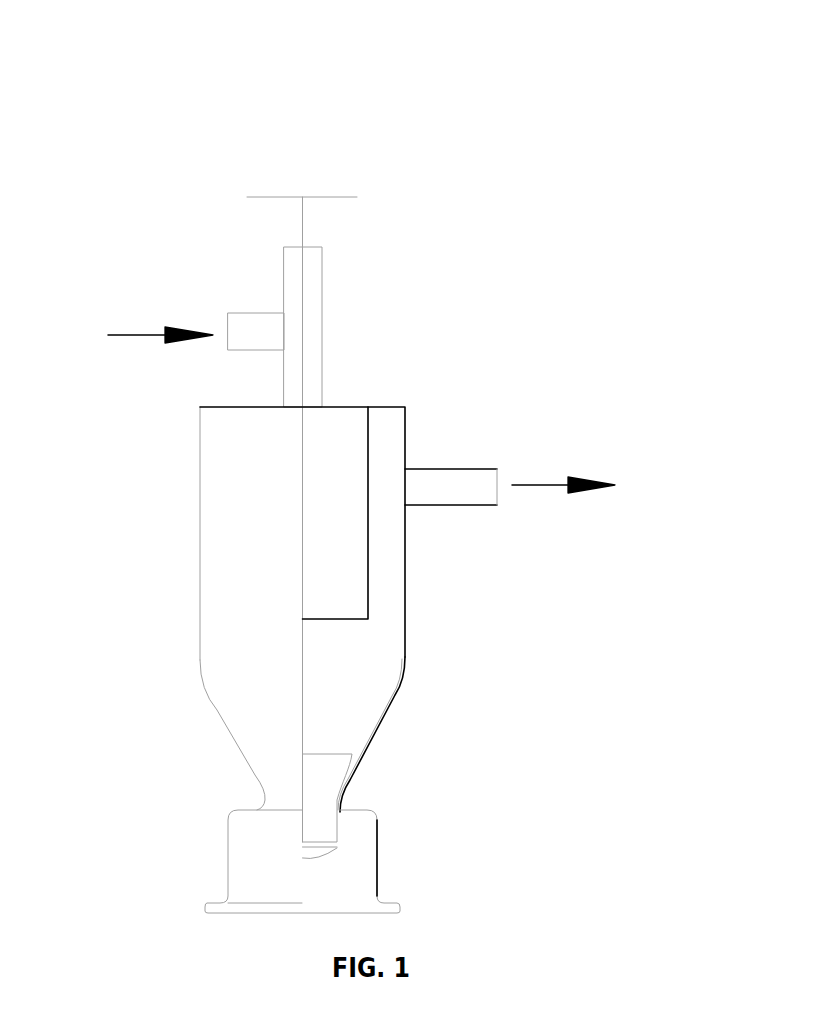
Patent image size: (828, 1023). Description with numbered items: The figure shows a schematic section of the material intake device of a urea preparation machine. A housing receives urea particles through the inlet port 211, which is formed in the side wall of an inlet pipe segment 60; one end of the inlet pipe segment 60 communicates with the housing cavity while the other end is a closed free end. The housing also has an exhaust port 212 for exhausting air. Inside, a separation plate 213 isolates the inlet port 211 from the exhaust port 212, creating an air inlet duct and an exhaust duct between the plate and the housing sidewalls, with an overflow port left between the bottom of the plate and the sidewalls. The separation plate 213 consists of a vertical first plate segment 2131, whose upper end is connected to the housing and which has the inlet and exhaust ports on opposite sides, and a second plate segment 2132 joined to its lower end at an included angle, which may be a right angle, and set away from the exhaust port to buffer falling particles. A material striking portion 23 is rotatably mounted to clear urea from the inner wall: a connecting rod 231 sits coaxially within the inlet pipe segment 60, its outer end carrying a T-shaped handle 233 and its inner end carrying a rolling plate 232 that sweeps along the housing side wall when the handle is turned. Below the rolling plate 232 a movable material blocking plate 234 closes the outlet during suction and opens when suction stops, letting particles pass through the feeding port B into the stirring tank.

The material striking portion 23 is at (248, 155).
The handle 233 is at (303, 197).
The connecting rod 231 is at (303, 447).
The rolling plate 232 is at (330, 755).
The material blocking plate 234 is at (338, 847).
The inlet pipe segment 60 is at (312, 333).
The inlet port 211 is at (248, 331).
The exhaust port 212 is at (498, 485).
The separation plate 213 is at (540, 578).
The first plate segment 2131 is at (368, 578).
The second plate segment 2132 is at (335, 619).
The feeding port B is at (297, 887).